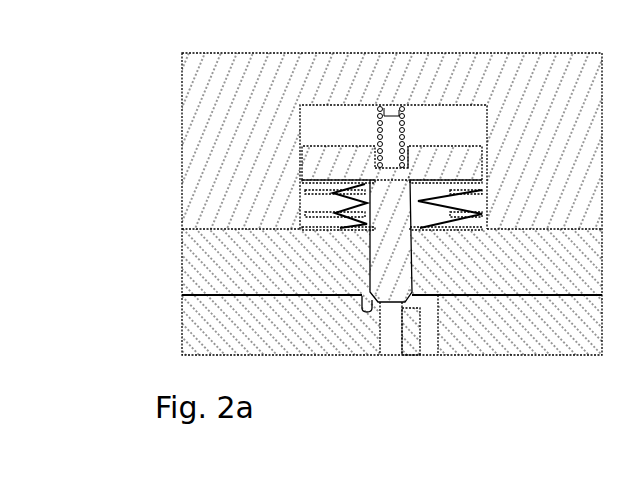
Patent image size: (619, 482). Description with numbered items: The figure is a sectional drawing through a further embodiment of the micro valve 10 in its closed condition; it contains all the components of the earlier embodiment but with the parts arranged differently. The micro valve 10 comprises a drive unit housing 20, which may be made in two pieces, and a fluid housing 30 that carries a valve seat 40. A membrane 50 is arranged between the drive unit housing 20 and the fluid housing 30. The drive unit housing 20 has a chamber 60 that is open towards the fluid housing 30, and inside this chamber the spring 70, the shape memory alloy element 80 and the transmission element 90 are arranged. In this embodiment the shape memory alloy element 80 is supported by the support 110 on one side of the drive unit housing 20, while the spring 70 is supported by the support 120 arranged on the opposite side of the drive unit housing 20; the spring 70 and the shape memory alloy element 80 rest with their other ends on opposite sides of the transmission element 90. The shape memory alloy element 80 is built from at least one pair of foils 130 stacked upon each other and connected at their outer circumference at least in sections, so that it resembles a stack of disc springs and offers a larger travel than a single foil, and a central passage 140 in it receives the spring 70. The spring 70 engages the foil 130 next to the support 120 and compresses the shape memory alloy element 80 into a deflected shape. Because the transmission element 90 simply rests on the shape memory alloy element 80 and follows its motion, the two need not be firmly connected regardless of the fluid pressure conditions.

The micro valve 10 is at (149, 151).
The drive unit housing 20 is at (198, 183).
The fluid housing 30 is at (198, 326).
The valve seat 40 is at (415, 306).
The membrane 50 is at (440, 297).
The chamber 60 is at (315, 162).
The spring 70 is at (405, 133).
The shape memory alloy element 80 is at (472, 214).
The transmission element 90 is at (448, 160).
The support 110 is at (328, 230).
The support 120 is at (382, 108).
The foils 130 is at (335, 218).
The central passage 140 is at (368, 214).